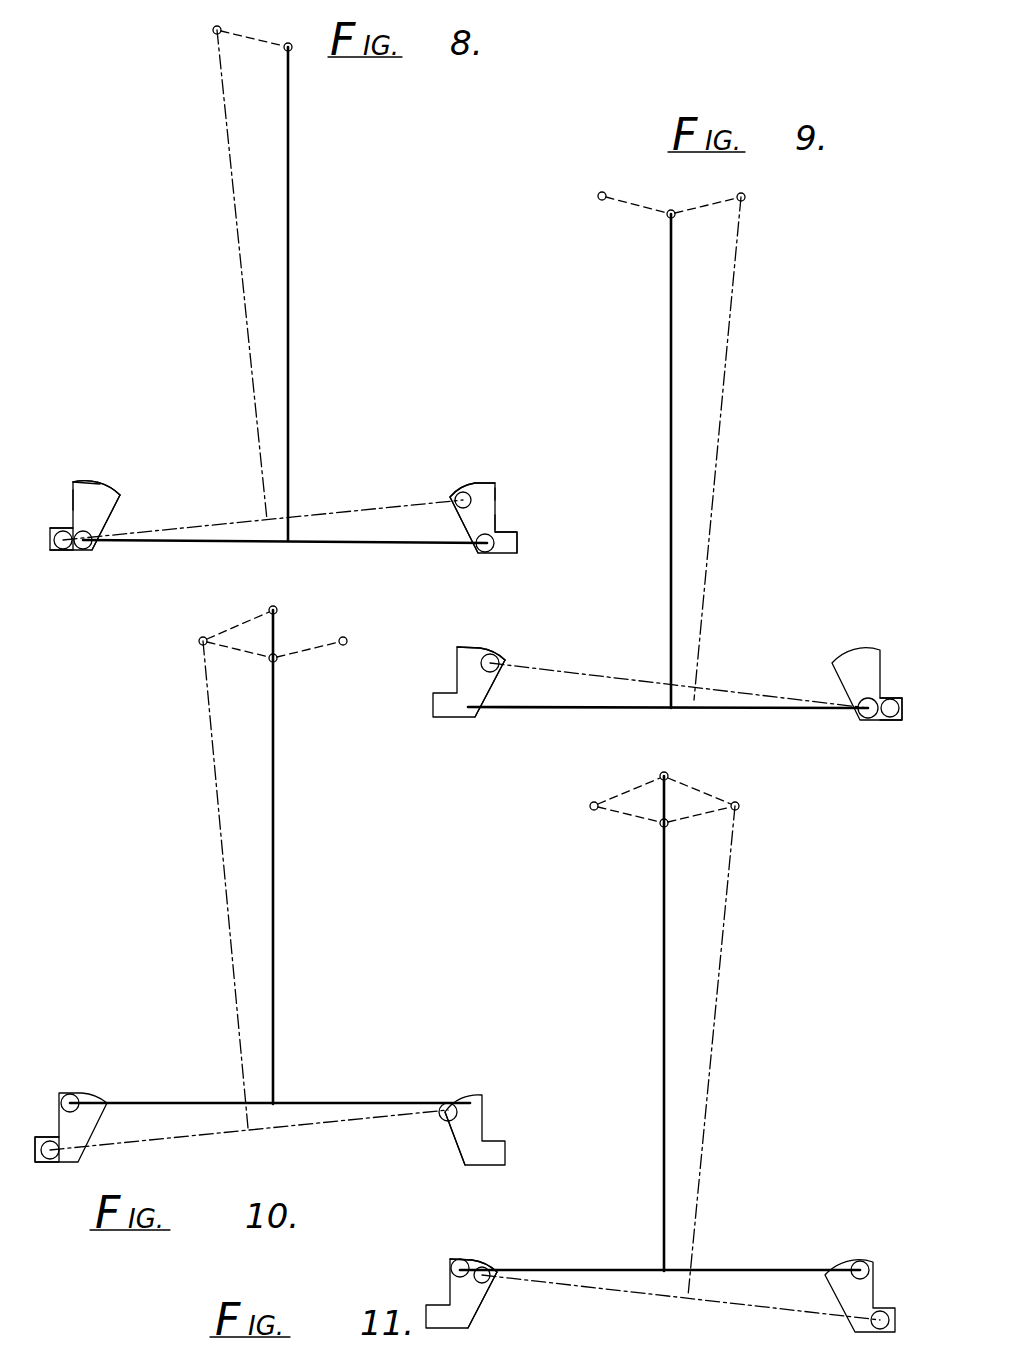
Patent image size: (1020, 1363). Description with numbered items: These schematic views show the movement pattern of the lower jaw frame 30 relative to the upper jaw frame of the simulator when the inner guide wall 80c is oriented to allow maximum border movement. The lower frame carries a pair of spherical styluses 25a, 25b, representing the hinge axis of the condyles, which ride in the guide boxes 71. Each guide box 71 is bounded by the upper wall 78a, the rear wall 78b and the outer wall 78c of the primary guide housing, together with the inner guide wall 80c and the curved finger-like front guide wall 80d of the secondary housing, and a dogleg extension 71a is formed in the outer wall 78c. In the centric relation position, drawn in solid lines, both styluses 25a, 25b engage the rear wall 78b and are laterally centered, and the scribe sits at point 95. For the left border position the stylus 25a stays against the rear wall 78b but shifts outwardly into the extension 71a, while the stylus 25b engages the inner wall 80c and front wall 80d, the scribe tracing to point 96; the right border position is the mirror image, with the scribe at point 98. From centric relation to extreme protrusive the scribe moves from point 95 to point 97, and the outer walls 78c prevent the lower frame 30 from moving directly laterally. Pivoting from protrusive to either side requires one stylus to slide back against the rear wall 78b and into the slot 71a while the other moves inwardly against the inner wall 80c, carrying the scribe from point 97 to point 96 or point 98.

In FIG. 8, the lower jaw frame 30 is at (287, 300).
In FIG. 9, the lower jaw frame 30 is at (672, 484).
In FIG. 10, the lower jaw frame 30 is at (272, 912).
In FIG. 11, the lower jaw frame 30 is at (665, 1072).
In FIG. 8, the centric relation point 95 is at (291, 46).
In FIG. 9, the centric relation point 95 is at (668, 216).
In FIG. 10, the centric relation point 95 is at (277, 660).
In FIG. 11, the centric relation point 95 is at (660, 826).
In FIG. 8, the maximum left border point 96 is at (213, 29).
In FIG. 9, the maximum left border point 96 is at (597, 195).
In FIG. 10, the maximum left border point 96 is at (198, 641).
In FIG. 11, the maximum left border point 96 is at (589, 806).
In FIG. 10, the extreme protrusive point 97 is at (277, 608).
In FIG. 11, the extreme protrusive point 97 is at (668, 773).
In FIG. 9, the maximum right border point 98 is at (746, 196).
In FIG. 10, the maximum right border point 98 is at (347, 640).
In FIG. 11, the maximum right border point 98 is at (739, 805).
In FIG. 8, the guide box 71 is at (110, 515).
In FIG. 9, the guide box 71 is at (432, 700).
In FIG. 10, the guide box 71 is at (88, 1092).
In FIG. 11, the guide box 71 is at (480, 1300).
In FIG. 8, the dogleg extension 71a is at (58, 528).
In FIG. 9, the dogleg extension 71a is at (892, 697).
In FIG. 8, the spherical stylus 25a is at (68, 552).
In FIG. 9, the spherical stylus 25a is at (482, 665).
In FIG. 10, the spherical stylus 25a is at (78, 1094).
In FIG. 11, the spherical stylus 25a is at (472, 1260).
In FIG. 8, the spherical stylus 25b is at (470, 494).
In FIG. 9, the spherical stylus 25b is at (866, 719).
In FIG. 10, the spherical stylus 25b is at (452, 1122).
In FIG. 11, the spherical stylus 25b is at (848, 1278).
In FIG. 8, the upper wall 78a is at (80, 482).
In FIG. 8, the rear wall 78b is at (84, 552).
In FIG. 9, the rear wall 78b is at (884, 720).
In FIG. 10, the rear wall 78b is at (40, 1165).
In FIG. 11, the rear wall 78b is at (880, 1320).
In FIG. 8, the outer wall 78c is at (72, 492).
In FIG. 8, the inner guide wall 80c is at (120, 495).
In FIG. 9, the inner guide wall 80c is at (494, 680).
In FIG. 10, the inner guide wall 80c is at (454, 1142).
In FIG. 11, the inner guide wall 80c is at (480, 1320).
In FIG. 8, the front guide wall 80d is at (98, 483).
In FIG. 9, the front guide wall 80d is at (488, 648).
In FIG. 11, the front guide wall 80d is at (485, 1265).